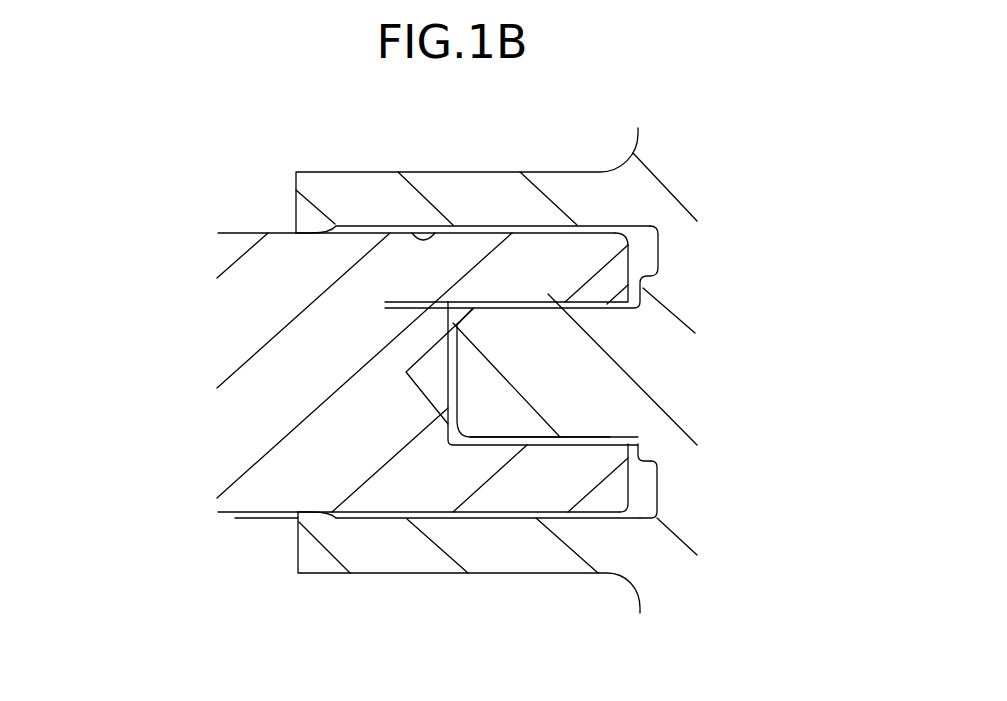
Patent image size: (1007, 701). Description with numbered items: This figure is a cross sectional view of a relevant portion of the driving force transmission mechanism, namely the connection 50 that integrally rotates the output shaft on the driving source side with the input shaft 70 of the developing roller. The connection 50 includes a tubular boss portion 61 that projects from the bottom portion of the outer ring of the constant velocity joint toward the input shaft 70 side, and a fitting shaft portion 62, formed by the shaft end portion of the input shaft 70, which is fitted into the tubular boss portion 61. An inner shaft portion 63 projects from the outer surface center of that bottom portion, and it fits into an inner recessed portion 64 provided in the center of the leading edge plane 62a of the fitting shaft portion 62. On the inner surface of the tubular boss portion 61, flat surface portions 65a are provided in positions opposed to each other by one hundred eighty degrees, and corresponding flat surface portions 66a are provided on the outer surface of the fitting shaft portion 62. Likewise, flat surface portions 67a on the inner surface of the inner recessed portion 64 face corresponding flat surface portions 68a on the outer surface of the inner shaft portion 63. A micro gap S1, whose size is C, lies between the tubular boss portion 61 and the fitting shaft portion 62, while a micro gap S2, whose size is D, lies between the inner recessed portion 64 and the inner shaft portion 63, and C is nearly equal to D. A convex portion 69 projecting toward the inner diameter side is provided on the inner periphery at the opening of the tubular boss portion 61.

The connection 50 is at (378, 168).
The input shaft 70 is at (246, 230).
The flat surface portions 65a is at (443, 225).
The micro gap S1 is at (498, 225).
The flat surface portions 66a is at (554, 226).
The micro gap S2 is at (537, 302).
The size of gap S2 D is at (390, 277).
The flat surface portions 67a is at (583, 311).
The inner shaft portion 63 is at (472, 395).
The inner recessed portion 64 is at (548, 437).
The flat surface portions 68a is at (641, 452).
The leading edge plane 62a is at (658, 483).
The convex portion 69 is at (317, 510).
The size of gap S1 C is at (245, 485).
The fitting shaft portion 62 is at (414, 484).
The tubular boss portion 61 is at (560, 576).